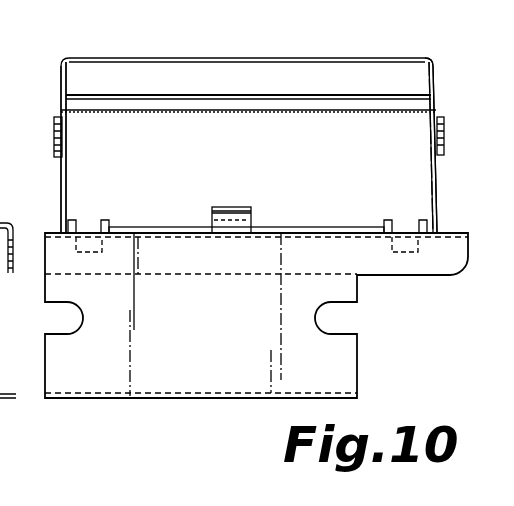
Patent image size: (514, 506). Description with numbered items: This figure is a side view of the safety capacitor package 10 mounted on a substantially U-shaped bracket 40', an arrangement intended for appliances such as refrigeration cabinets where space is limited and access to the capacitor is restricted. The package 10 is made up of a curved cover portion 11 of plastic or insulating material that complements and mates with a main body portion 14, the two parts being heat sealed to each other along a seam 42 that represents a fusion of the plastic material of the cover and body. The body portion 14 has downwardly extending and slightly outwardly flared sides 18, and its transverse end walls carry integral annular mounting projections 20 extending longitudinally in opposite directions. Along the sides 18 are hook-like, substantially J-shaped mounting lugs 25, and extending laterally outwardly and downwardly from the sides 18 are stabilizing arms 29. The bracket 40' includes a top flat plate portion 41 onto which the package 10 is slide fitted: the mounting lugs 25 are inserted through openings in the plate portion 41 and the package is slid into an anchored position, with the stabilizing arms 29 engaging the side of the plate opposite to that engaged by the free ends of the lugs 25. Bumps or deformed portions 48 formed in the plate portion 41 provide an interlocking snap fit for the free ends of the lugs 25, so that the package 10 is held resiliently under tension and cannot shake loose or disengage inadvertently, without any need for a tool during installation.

The safety capacitor package 10 is at (435, 62).
The cover portion 11 is at (372, 66).
The main body portion 14 is at (440, 175).
The sides 18 is at (90, 178).
The annular mounting projections 20 is at (54, 134).
The J-shaped mounting lugs 25 is at (85, 230).
The stabilizing arms 29 is at (232, 228).
The U-shaped bracket 40' is at (256, 339).
The top flat plate portion 41 is at (177, 233).
The seam 42 is at (194, 110).
The bumps or deformed portions 48 is at (103, 238).